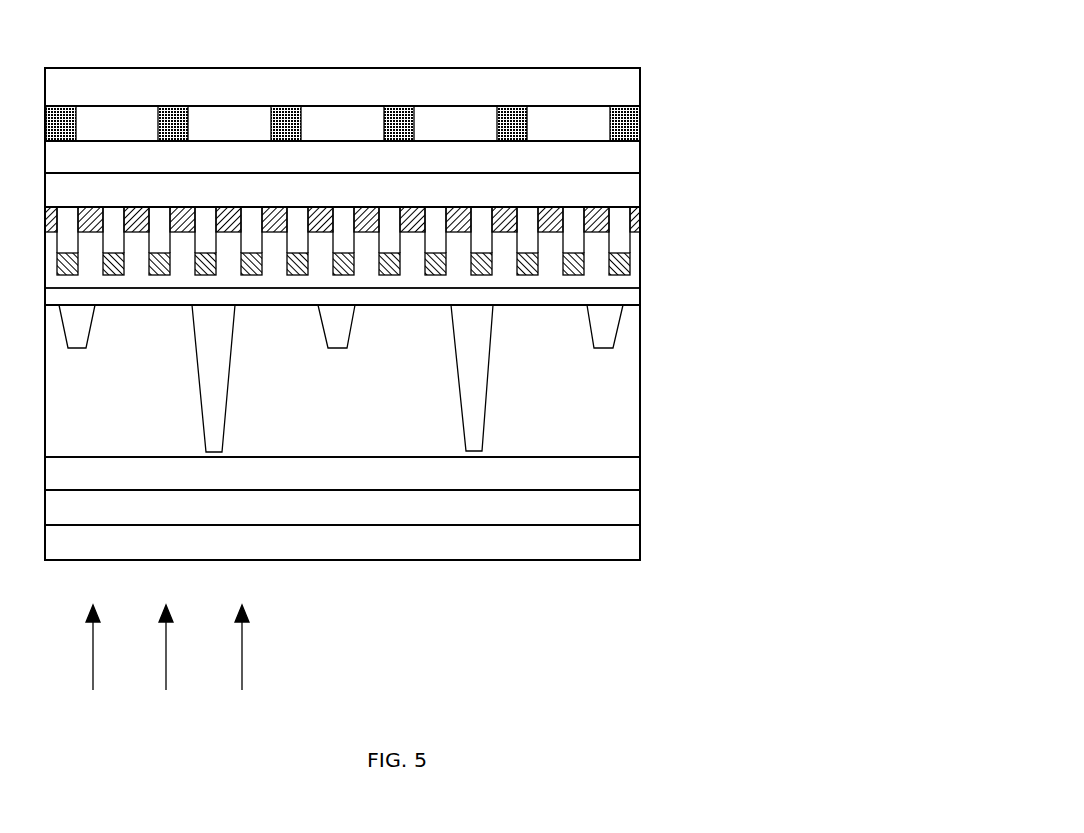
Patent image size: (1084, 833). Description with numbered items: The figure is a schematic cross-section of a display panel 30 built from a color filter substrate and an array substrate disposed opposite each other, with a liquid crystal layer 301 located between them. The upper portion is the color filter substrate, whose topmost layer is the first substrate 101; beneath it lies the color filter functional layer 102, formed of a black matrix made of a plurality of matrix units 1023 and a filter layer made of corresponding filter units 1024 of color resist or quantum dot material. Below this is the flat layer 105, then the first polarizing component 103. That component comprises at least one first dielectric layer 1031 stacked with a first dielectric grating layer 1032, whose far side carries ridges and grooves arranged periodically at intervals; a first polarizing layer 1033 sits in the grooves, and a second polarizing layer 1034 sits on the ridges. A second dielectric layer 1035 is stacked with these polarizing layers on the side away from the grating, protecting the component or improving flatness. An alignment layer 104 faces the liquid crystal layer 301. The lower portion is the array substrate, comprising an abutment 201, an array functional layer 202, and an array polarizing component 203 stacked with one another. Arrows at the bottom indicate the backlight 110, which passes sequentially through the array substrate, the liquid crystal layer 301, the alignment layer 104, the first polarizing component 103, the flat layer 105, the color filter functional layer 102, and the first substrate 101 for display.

The display panel 30 is at (352, 36).
The first substrate 101 is at (607, 90).
The color filter functional layer 102 is at (783, 90).
The matrix units 1023 is at (633, 107).
The filter units 1024 is at (600, 132).
The flat layer 105 is at (607, 160).
The first polarizing component 103 is at (810, 185).
The first dielectric layer 1031 is at (607, 190).
The first polarizing layer 1033 is at (632, 216).
The first dielectric grating layer 1032 is at (623, 243).
The second polarizing layer 1034 is at (629, 265).
The second dielectric layer 1035 is at (608, 285).
The alignment layer 104 is at (545, 298).
The liquid crystal layer 301 is at (565, 374).
The array functional layer 202 is at (590, 480).
The abutment 201 is at (578, 514).
The array polarizing component 203 is at (572, 550).
The backlight 110 is at (167, 671).